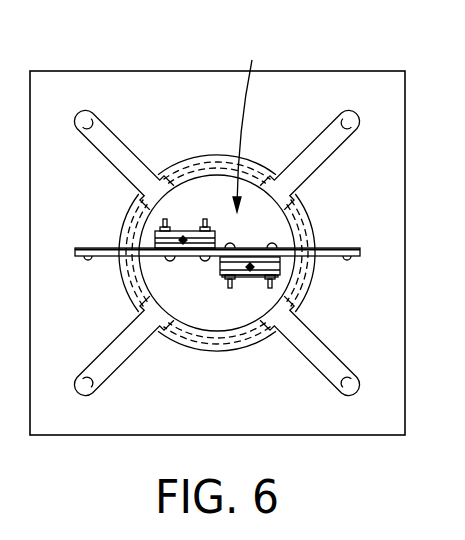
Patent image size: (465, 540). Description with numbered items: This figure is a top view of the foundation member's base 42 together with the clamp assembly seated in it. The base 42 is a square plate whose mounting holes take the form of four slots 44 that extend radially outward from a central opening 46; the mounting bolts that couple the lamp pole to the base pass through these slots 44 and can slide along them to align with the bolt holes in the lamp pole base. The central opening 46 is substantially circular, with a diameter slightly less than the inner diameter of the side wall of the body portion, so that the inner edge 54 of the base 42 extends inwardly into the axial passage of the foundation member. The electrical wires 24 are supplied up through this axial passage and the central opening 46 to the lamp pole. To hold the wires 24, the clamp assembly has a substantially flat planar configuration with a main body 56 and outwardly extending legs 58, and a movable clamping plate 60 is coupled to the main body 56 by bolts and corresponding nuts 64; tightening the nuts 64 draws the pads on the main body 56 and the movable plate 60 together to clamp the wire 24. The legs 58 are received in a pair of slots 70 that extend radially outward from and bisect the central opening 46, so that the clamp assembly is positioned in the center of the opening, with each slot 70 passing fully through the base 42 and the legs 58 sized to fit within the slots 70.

The base 42 is at (174, 71).
The slots 44 is at (91, 117).
The central opening 46 is at (250, 126).
The wires 24 is at (186, 236).
The nuts 64 is at (205, 219).
The legs 58 is at (110, 250).
The inner edge 54 is at (286, 217).
The slots 70 is at (88, 262).
The main body 56 is at (154, 257).
The movable clamping plate 60 is at (236, 279).